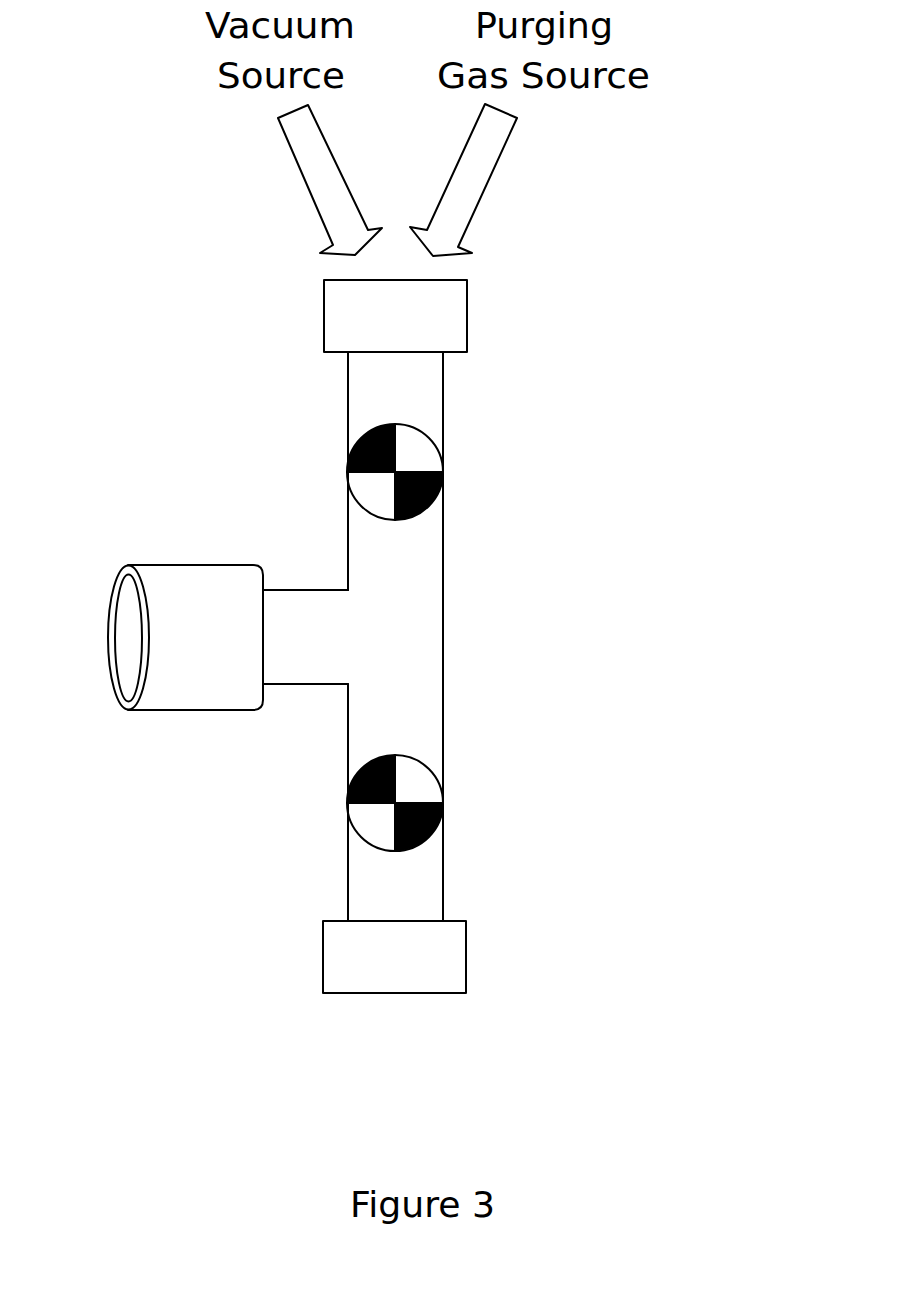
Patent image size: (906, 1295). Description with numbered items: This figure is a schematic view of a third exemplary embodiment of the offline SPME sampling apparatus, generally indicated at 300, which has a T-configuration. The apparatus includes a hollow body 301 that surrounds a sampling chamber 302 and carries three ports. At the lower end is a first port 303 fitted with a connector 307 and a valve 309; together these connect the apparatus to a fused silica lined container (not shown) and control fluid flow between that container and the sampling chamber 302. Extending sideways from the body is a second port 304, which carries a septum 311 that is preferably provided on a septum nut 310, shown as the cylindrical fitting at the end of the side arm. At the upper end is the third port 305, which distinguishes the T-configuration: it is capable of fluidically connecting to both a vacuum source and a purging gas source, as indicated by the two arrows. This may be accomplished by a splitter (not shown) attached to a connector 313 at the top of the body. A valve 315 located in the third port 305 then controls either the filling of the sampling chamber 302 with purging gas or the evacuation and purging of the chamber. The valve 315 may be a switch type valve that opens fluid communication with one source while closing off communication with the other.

The SPME sampling apparatus 300 is at (641, 380).
The hollow body 301 is at (443, 672).
The sampling chamber 302 is at (417, 650).
The first port 303 is at (443, 881).
The second port 304 is at (300, 684).
The third port 305 is at (347, 543).
The connector 307 is at (466, 967).
The valve 309 is at (348, 805).
The septum nut 310 is at (202, 710).
The septum 311 is at (123, 657).
The connector 313 is at (324, 313).
The valve 315 is at (443, 472).